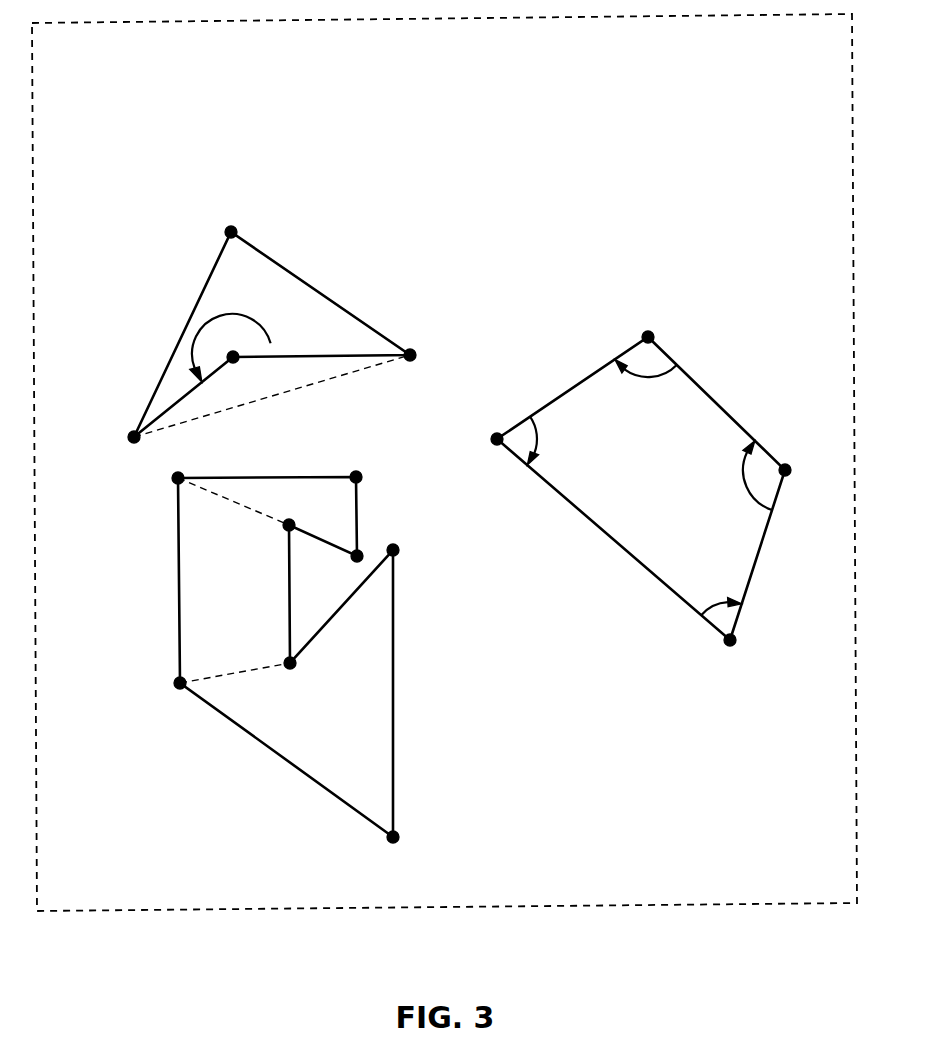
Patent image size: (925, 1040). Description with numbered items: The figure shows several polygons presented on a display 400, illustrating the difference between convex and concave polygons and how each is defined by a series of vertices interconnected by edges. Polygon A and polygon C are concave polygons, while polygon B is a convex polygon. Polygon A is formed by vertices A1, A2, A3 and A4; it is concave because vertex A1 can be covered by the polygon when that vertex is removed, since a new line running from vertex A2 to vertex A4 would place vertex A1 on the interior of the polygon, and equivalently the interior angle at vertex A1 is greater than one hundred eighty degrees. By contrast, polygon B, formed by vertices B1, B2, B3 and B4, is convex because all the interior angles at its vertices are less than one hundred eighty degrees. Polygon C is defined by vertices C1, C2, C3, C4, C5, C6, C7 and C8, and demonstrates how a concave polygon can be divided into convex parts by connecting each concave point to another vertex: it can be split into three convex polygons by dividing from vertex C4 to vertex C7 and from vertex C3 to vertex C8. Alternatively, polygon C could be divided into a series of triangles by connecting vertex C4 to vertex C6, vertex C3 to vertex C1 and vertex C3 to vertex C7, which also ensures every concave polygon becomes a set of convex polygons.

The display 400 is at (752, 89).
The polygon A is at (250, 298).
The vertex A1 is at (244, 349).
The vertex A2 is at (422, 346).
The vertex A3 is at (244, 224).
The vertex A4 is at (124, 428).
The polygon B is at (658, 483).
The vertex B1 is at (743, 649).
The vertex B2 is at (797, 460).
The vertex B3 is at (660, 330).
The vertex B4 is at (487, 432).
The polygon C is at (232, 596).
The vertex C1 is at (405, 828).
The vertex C2 is at (404, 542).
The vertex C3 is at (302, 673).
The vertex C4 is at (275, 533).
The vertex C5 is at (343, 564).
The vertex C6 is at (367, 469).
The vertex C7 is at (189, 470).
The vertex C8 is at (169, 675).